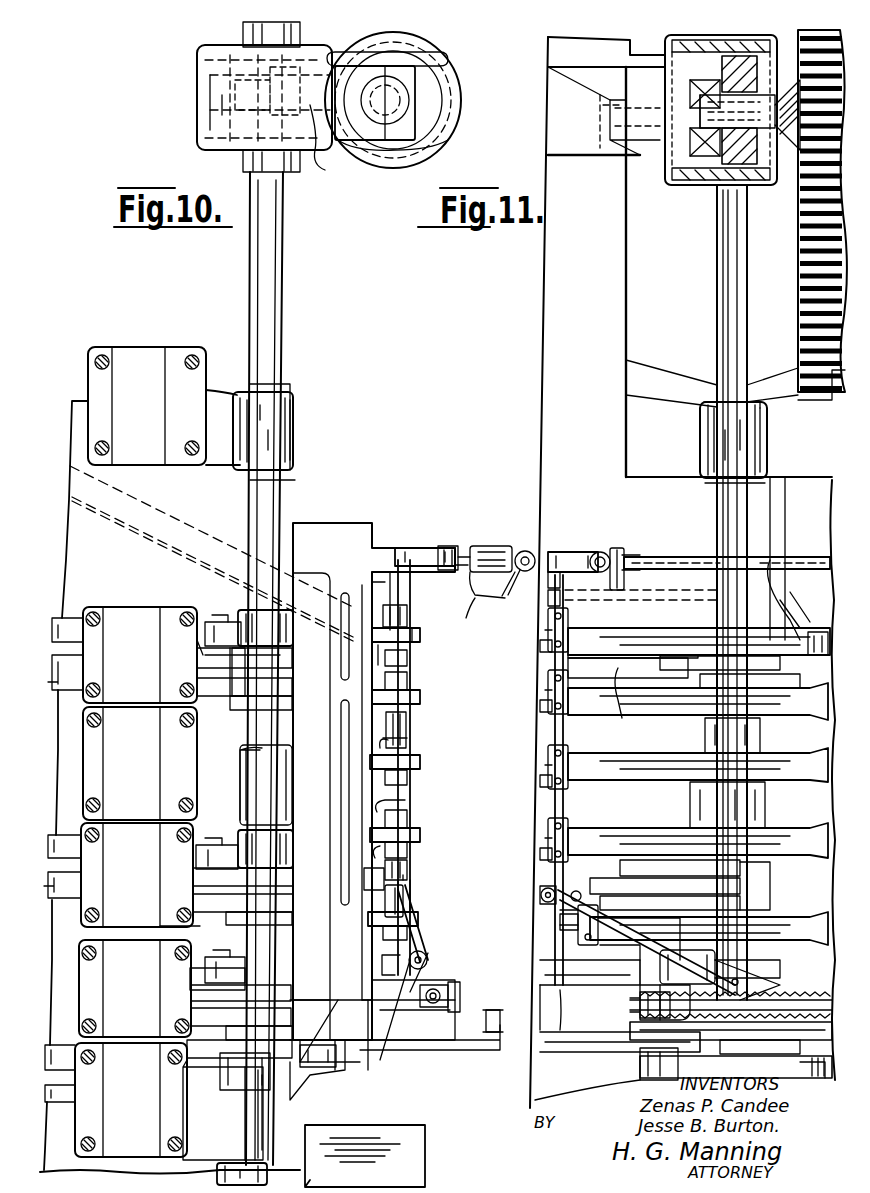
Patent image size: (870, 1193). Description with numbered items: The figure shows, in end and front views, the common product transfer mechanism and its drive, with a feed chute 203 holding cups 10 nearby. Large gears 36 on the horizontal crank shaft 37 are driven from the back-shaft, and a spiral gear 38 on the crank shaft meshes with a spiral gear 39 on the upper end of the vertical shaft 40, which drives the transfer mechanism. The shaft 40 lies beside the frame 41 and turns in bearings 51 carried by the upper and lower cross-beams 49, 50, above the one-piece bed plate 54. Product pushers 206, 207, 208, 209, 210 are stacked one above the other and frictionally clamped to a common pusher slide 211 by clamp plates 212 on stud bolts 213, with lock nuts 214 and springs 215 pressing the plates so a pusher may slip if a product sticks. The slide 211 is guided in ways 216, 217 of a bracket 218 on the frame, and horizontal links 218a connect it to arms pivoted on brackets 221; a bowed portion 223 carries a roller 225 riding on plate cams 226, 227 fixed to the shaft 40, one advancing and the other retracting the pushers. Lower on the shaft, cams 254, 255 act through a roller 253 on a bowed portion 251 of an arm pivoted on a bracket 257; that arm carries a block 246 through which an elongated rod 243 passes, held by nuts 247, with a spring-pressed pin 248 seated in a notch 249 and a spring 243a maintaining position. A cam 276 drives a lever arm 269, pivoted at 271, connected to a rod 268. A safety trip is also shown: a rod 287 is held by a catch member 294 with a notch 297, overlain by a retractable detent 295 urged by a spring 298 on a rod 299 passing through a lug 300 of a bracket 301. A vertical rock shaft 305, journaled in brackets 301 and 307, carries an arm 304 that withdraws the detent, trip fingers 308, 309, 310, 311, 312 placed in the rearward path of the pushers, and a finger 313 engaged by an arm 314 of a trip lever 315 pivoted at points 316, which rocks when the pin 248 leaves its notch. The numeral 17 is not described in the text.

In FIG. 11, the cups 10 is at (812, 652).
In FIG. 10, the section line 17 is at (458, 522).
In FIG. 11, the large gears 36 is at (808, 226).
In FIG. 10, the crank shaft 37 is at (393, 105).
In FIG. 11, the crank shaft 37 is at (725, 125).
In FIG. 10, the spiral gear 38 is at (372, 158).
In FIG. 11, the spiral gear 38 is at (762, 162).
In FIG. 10, the spiral gear 39 is at (312, 110).
In FIG. 10, the vertical shaft 40 is at (280, 240).
In FIG. 11, the vertical shaft 40 is at (748, 328).
In FIG. 11, the frame 41 is at (552, 395).
In FIG. 10, the upper horizontal cross-beam 49 is at (212, 432).
In FIG. 11, the upper horizontal cross-beam 49 is at (655, 405).
In FIG. 10, the lower horizontal cross-beam 50 is at (215, 1118).
In FIG. 10, the bearings 51 is at (294, 456).
In FIG. 11, the bearings 51 is at (704, 438).
In FIG. 10, the bed plate 54 is at (385, 1135).
In FIG. 10, the feed chute 203 is at (178, 548).
In FIG. 11, the feed chute 203 is at (805, 486).
In FIG. 10, the product pusher 206 is at (357, 644).
In FIG. 11, the product pusher 206 is at (800, 618).
In FIG. 11, the product pusher 207 is at (800, 712).
In FIG. 11, the product pusher 208 is at (800, 776).
In FIG. 11, the product pusher 209 is at (800, 852).
In FIG. 11, the product pusher 210 is at (800, 942).
In FIG. 10, the pusher slide 211 is at (355, 794).
In FIG. 11, the pusher slide 211 is at (595, 800).
In FIG. 10, the clamp plates 212 is at (398, 812).
In FIG. 11, the clamp plates 212 is at (548, 630).
In FIG. 10, the stud bolts 213 is at (410, 857).
In FIG. 10, the lock nuts 214 is at (410, 742).
In FIG. 11, the lock nuts 214 is at (580, 672).
In FIG. 10, the springs 215 is at (410, 725).
In FIG. 10, the way 216 is at (346, 595).
In FIG. 10, the way 217 is at (345, 948).
In FIG. 10, the bracket 218 is at (322, 530).
In FIG. 11, the horizontal links 218a is at (620, 710).
In FIG. 10, the brackets 221 is at (120, 616).
In FIG. 10, the bowed portion 223 is at (205, 650).
In FIG. 10, the roller 225 is at (210, 620).
In FIG. 10, the plate cam 226 is at (222, 678).
In FIG. 10, the plate cam 227 is at (245, 612).
In FIG. 10, the elongated rod 243 is at (452, 994).
In FIG. 11, the elongated rod 243 is at (731, 1000).
In FIG. 11, the spring 243a is at (818, 1094).
In FIG. 11, the block 246 is at (650, 1035).
In FIG. 11, the nuts 247 is at (660, 1010).
In FIG. 11, the spring-pressed pin 248 is at (660, 985).
In FIG. 11, the notch 249 is at (740, 1046).
In FIG. 10, the bowed portion 251 is at (200, 988).
In FIG. 10, the roller 253 is at (205, 972).
In FIG. 10, the cam 254 is at (200, 1014).
In FIG. 10, the cam 255 is at (232, 958).
In FIG. 10, the bracket 257 is at (148, 921).
In FIG. 10, the rod 268 is at (510, 1008).
In FIG. 11, the rod 268 is at (640, 1066).
In FIG. 10, the arm 269 is at (462, 1038).
In FIG. 10, the pivot 271 is at (340, 1065).
In FIG. 10, the cam 276 is at (220, 1050).
In FIG. 11, the cam 276 is at (736, 1067).
In FIG. 11, the rod 287 is at (690, 556).
In FIG. 10, the catch member 294 is at (526, 550).
In FIG. 11, the catch member 294 is at (615, 547).
In FIG. 10, the retractable detent 295 is at (474, 578).
In FIG. 11, the retractable detent 295 is at (600, 552).
In FIG. 10, the notch 297 is at (518, 575).
In FIG. 10, the spring 298 is at (462, 598).
In FIG. 10, the rod 299 is at (460, 548).
In FIG. 10, the lug 300 is at (508, 550).
In FIG. 10, the bracket 301 is at (444, 546).
In FIG. 11, the bracket 301 is at (626, 552).
In FIG. 10, the arm 304 is at (395, 548).
In FIG. 11, the arm 304 is at (578, 555).
In FIG. 10, the rock shaft 305 is at (410, 880).
In FIG. 11, the rock shaft 305 is at (600, 608).
In FIG. 10, the bracket 307 is at (455, 968).
In FIG. 11, the bracket 307 is at (560, 975).
In FIG. 10, the trip finger 308 is at (420, 634).
In FIG. 10, the trip finger 309 is at (420, 694).
In FIG. 10, the trip finger 310 is at (420, 760).
In FIG. 10, the trip finger 311 is at (420, 832).
In FIG. 10, the trip finger 312 is at (418, 918).
In FIG. 10, the finger 313 is at (405, 898).
In FIG. 11, the finger 313 is at (540, 896).
In FIG. 10, the arm 314 is at (415, 940).
In FIG. 11, the arm 314 is at (560, 905).
In FIG. 10, the trip lever 315 is at (430, 954).
In FIG. 11, the trip lever 315 is at (595, 980).
In FIG. 11, the pivot points 316 is at (765, 970).